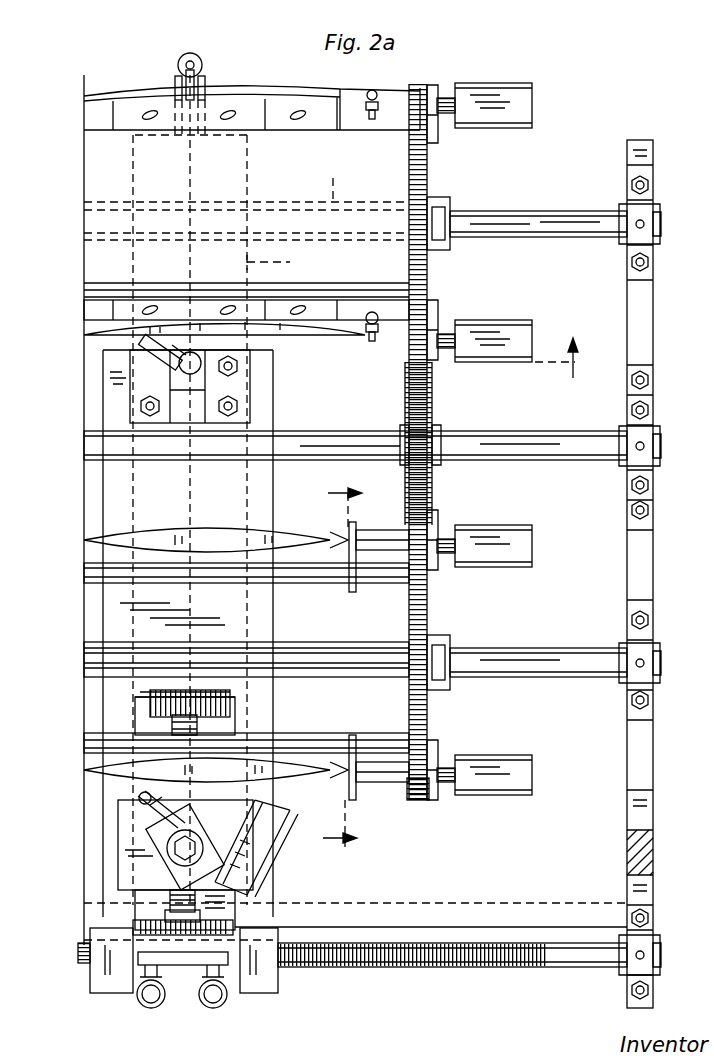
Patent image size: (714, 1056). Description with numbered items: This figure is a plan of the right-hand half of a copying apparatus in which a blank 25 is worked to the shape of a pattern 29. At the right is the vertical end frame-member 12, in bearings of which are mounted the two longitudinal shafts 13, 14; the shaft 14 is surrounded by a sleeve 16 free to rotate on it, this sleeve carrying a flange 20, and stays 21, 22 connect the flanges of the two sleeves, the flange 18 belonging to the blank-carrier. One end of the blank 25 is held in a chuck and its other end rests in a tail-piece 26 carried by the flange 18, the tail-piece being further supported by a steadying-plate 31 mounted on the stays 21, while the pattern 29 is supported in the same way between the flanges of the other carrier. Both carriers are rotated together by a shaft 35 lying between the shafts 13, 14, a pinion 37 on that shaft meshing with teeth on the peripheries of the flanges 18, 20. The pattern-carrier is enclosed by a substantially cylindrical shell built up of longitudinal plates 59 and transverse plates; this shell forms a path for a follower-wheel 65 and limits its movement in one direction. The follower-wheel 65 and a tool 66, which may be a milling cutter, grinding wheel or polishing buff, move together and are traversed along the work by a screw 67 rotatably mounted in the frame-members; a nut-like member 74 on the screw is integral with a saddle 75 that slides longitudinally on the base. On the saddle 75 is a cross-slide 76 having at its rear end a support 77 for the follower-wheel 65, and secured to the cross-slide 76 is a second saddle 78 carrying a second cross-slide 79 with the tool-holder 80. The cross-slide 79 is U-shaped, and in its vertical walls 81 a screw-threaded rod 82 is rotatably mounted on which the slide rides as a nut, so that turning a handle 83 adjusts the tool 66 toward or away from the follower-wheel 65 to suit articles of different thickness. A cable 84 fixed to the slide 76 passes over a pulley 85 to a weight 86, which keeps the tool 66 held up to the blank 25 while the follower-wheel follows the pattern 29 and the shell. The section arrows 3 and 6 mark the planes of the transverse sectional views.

The section line 3 is at (565, 358).
The section line 6 is at (342, 666).
The end frame-member 12 is at (627, 522).
The shaft 13 is at (530, 665).
The shaft 14 is at (500, 222).
The sleeve 16 is at (82, 248).
The flange 18 is at (418, 792).
The flange 20 is at (418, 185).
The stays 21 is at (300, 578).
The stays 22 is at (246, 234).
The blank 25 is at (174, 545).
The tail-piece 26 is at (364, 535).
The pattern 29 is at (276, 336).
The steadying-plate 31 is at (353, 580).
The shaft 35 is at (533, 445).
The pinion 37 is at (420, 385).
The longitudinal plate 59 is at (270, 165).
The follower-wheel 65 is at (148, 362).
The tool 66 is at (142, 815).
The screw 67 is at (78, 952).
The nut-like member 74 is at (278, 975).
The saddle 75 is at (312, 298).
The cross-slide 76 is at (258, 690).
The support 77 is at (238, 386).
The second saddle 78 is at (227, 913).
The second cross-slide 79 is at (122, 862).
The tool-holder 80 is at (258, 825).
The vertical walls 81 is at (155, 705).
The screw-threaded rod 82 is at (200, 711).
The handle 83 is at (183, 962).
The cable 84 is at (196, 165).
The pulley 85 is at (176, 80).
The weight 86 is at (203, 68).